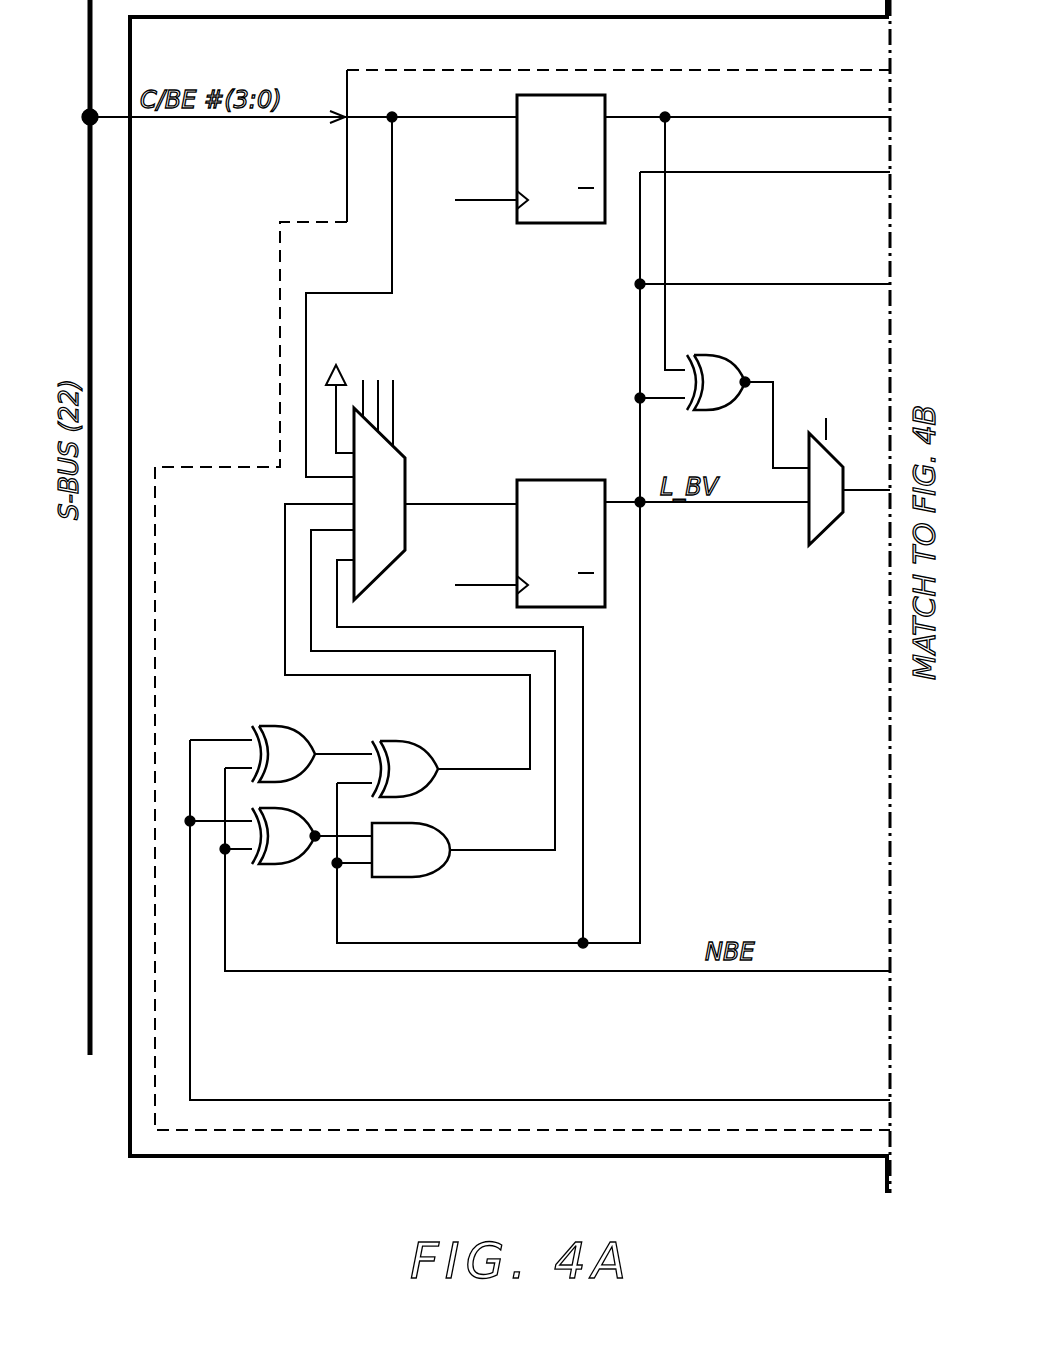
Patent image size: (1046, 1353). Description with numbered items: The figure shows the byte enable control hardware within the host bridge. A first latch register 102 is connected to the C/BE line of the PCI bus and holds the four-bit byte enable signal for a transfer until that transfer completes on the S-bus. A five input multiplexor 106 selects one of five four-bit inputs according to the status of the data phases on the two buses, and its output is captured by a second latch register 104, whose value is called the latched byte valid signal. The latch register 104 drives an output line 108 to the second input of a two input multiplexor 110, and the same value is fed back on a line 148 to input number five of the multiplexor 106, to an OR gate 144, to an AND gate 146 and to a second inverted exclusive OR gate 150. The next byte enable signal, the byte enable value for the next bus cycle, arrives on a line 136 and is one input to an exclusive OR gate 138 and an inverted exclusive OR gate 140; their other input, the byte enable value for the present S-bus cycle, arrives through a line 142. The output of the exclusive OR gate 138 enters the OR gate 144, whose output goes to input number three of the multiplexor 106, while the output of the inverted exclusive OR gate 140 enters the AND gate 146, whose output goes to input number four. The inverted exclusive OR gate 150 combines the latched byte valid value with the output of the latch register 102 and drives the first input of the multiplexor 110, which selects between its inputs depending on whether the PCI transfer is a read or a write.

The first latch register 102 is at (572, 224).
The second latch register 104 is at (522, 480).
The five input multiplexor 106 is at (406, 452).
The output line 108 is at (707, 526).
The two input multiplexor 110 is at (838, 524).
The line 136 is at (400, 974).
The exclusive OR gate 138 is at (300, 728).
The inverted exclusive OR gate 140 is at (306, 860).
The line 142 is at (562, 1100).
The OR gate 144 is at (420, 742).
The AND gate 146 is at (425, 878).
The line 148 is at (640, 352).
The second inverted exclusive OR gate 150 is at (722, 357).